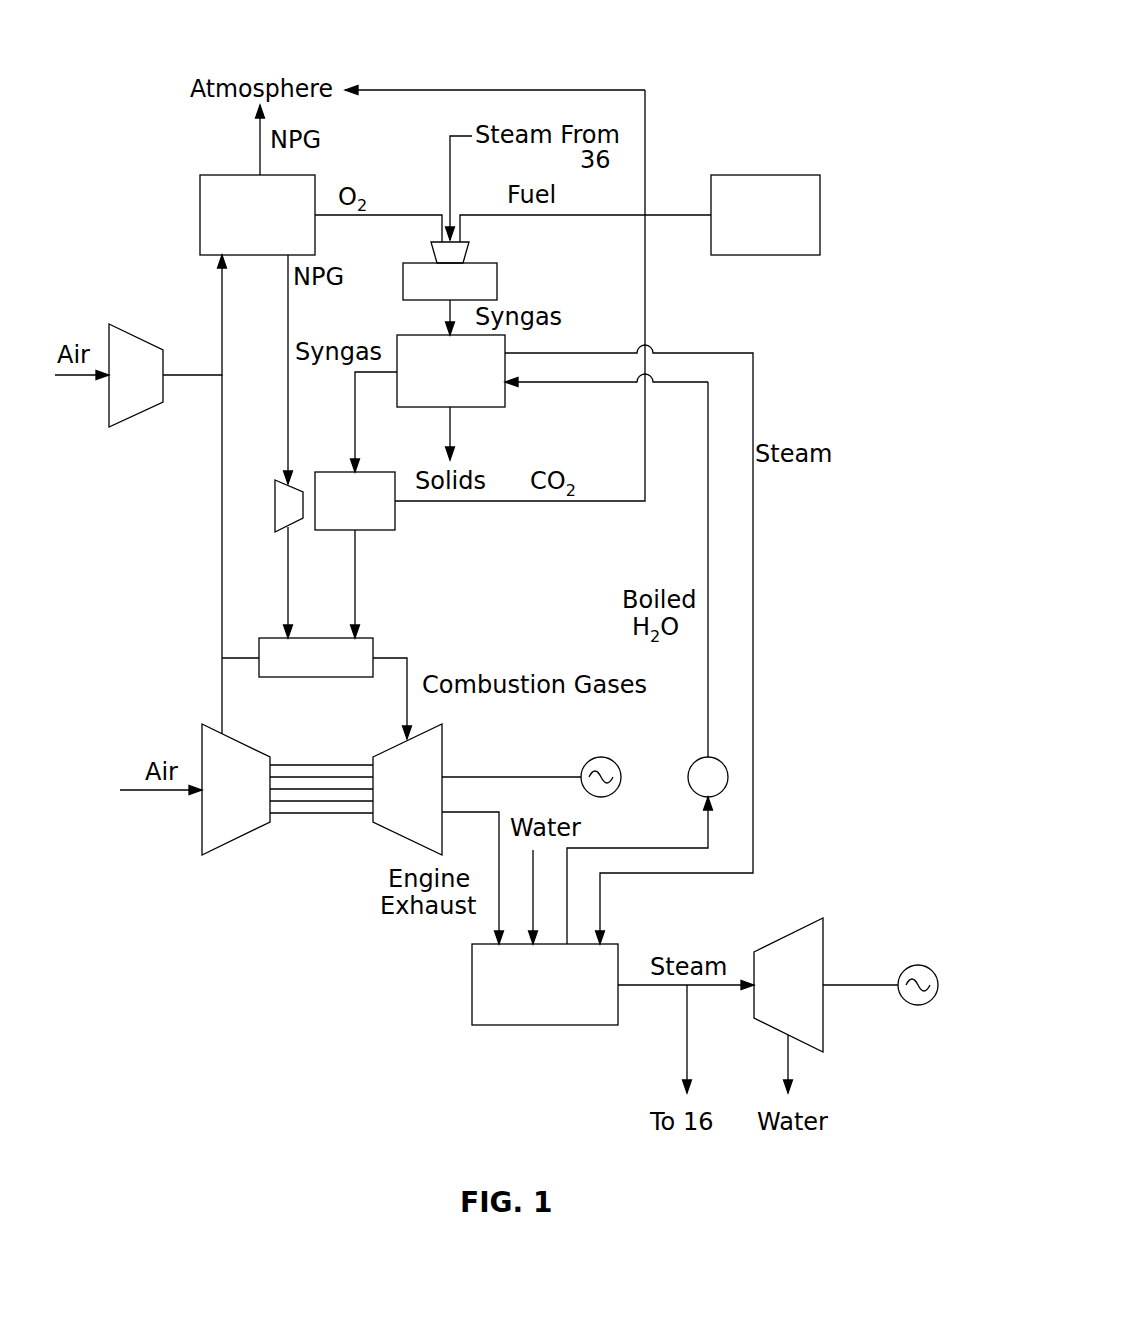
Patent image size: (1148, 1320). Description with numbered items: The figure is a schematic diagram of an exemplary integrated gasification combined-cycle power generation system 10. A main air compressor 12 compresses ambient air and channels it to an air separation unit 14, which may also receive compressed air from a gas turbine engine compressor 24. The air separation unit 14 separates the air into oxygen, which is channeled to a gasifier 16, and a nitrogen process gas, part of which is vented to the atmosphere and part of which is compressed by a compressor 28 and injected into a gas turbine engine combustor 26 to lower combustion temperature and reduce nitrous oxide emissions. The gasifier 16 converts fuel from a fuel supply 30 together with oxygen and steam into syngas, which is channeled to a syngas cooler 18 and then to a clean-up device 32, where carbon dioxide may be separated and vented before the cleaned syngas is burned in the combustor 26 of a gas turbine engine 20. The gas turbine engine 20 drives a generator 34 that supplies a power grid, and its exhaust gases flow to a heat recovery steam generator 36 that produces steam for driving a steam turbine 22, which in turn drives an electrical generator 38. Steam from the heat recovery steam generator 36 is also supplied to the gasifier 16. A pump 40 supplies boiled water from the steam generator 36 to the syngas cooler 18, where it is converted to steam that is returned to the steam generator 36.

The integrated gasification combined-cycle power generation system 10 is at (205, 42).
The main air compressor 12 is at (149, 388).
The air separation unit 14 is at (271, 228).
The gasifier 16 is at (431, 262).
The syngas cooler 18 is at (429, 335).
The gas turbine engine 20 is at (286, 764).
The steam turbine 22 is at (791, 934).
The gas turbine engine compressor 24 is at (204, 710).
The gas turbine engine combustor 26 is at (329, 671).
The compressor 28 is at (276, 482).
The fuel supply 30 is at (779, 228).
The clean-up device 32 is at (348, 472).
The generator 34 is at (594, 759).
The heat recovery steam generator 36 is at (558, 998).
The electrical generator 38 is at (918, 965).
The pump 40 is at (695, 760).